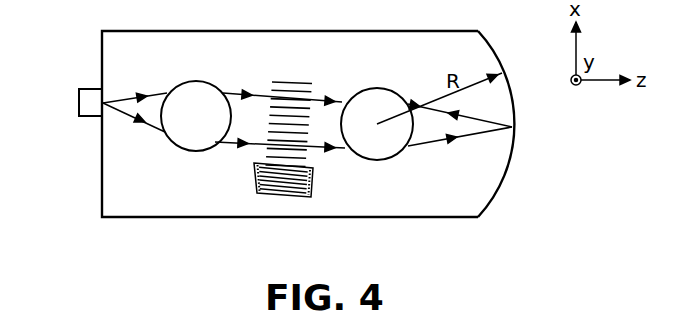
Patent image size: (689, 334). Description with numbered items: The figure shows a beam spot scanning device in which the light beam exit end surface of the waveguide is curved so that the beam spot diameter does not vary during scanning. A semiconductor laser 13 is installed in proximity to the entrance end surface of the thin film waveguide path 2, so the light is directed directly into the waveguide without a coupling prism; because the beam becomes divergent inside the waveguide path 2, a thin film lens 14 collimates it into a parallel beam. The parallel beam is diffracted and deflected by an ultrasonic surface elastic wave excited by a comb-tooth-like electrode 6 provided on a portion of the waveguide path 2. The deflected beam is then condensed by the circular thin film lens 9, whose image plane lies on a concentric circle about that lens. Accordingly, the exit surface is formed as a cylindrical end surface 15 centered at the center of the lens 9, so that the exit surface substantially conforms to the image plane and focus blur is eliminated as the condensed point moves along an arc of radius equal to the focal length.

The thin film waveguide path 2 is at (145, 212).
The comb-tooth-like electrode 6 is at (305, 196).
The thin film lens 9 is at (373, 90).
The semiconductor laser 13 is at (79, 101).
The thin film lens 14 is at (197, 82).
The cylindrical end surface 15 is at (500, 183).